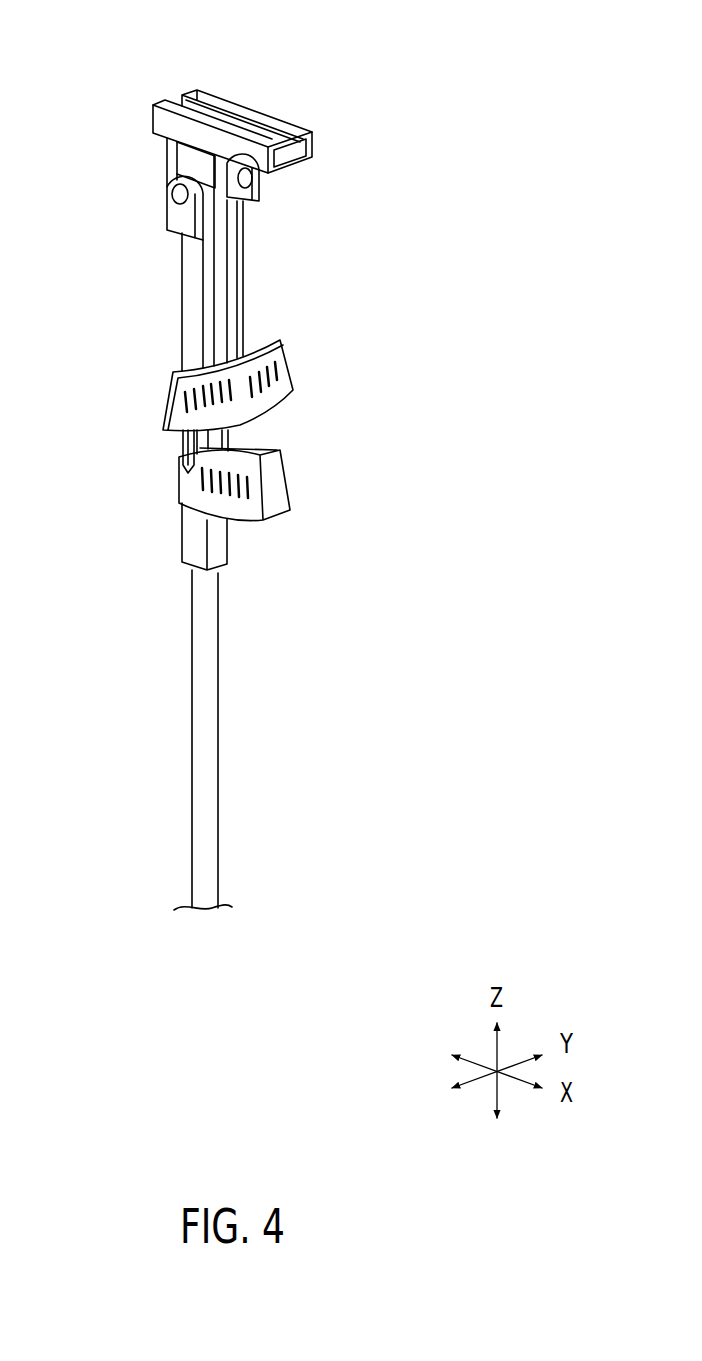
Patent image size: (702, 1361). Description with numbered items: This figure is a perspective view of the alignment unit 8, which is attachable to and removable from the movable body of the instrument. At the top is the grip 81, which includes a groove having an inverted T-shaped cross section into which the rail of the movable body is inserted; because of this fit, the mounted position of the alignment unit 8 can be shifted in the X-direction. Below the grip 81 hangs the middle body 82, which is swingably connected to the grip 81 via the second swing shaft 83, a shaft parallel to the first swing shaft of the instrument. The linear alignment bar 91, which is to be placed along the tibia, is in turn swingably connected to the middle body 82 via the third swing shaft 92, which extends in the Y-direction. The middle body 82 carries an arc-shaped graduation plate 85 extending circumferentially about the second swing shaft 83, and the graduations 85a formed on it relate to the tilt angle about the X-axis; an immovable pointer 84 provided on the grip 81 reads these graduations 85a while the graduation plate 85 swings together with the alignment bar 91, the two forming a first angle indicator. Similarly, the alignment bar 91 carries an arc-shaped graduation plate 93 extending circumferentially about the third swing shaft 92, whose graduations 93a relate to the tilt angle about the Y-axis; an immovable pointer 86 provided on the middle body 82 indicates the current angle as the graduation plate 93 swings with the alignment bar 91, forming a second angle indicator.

The alignment unit 8 is at (441, 187).
The grip 81 is at (165, 122).
The middle body 82 is at (197, 165).
The second swing shaft 83 is at (260, 186).
The pointer 84 is at (245, 318).
The graduation plate 85 is at (310, 386).
The graduations 85a is at (284, 362).
The pointer 86 is at (178, 448).
The alignment bar 91 is at (207, 787).
The third swing shaft 92 is at (172, 192).
The graduation plate 93 is at (318, 534).
The graduations 93a is at (237, 493).